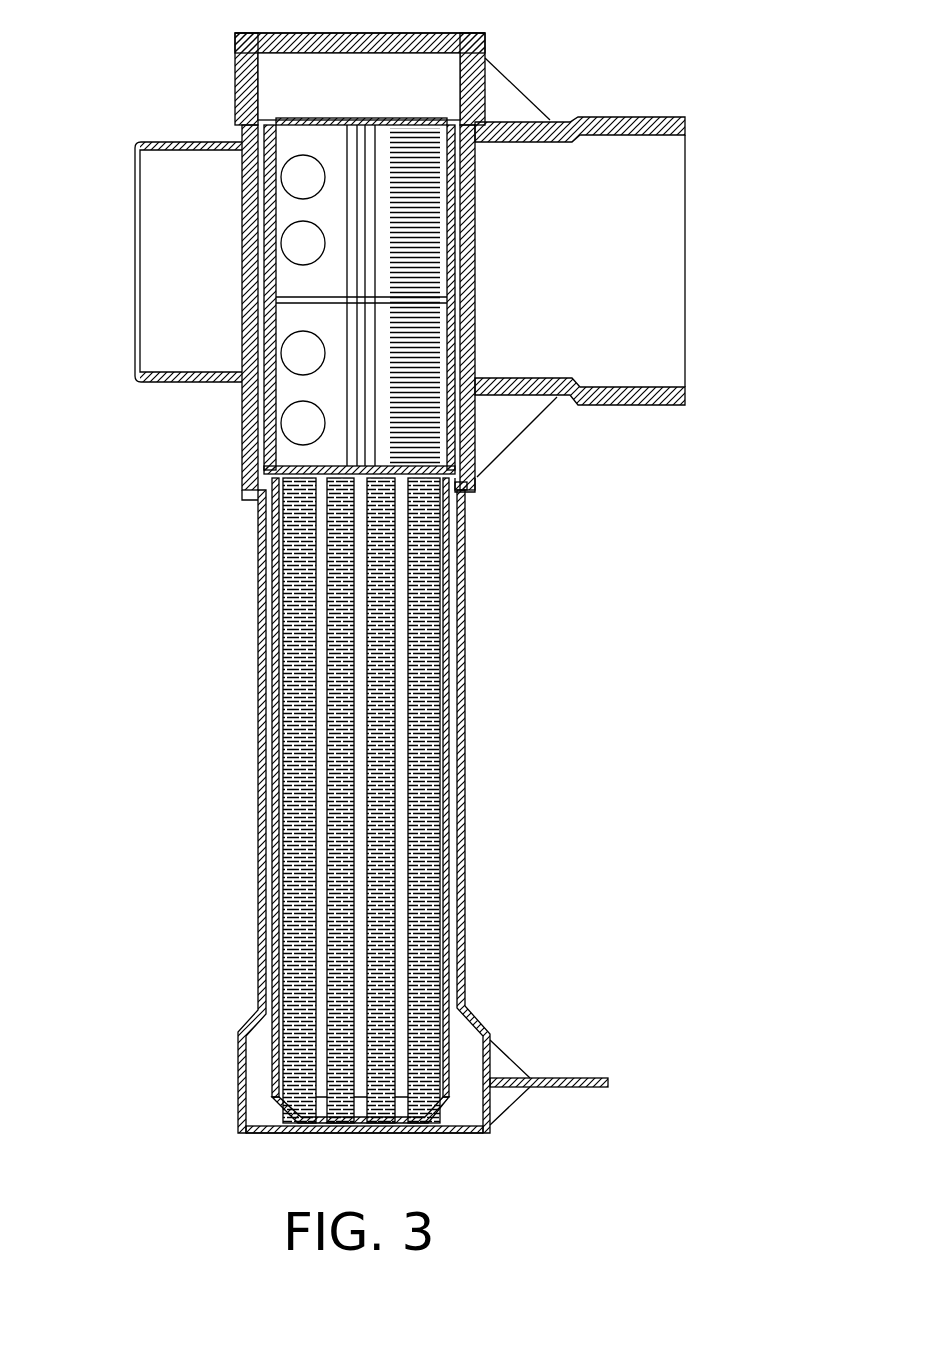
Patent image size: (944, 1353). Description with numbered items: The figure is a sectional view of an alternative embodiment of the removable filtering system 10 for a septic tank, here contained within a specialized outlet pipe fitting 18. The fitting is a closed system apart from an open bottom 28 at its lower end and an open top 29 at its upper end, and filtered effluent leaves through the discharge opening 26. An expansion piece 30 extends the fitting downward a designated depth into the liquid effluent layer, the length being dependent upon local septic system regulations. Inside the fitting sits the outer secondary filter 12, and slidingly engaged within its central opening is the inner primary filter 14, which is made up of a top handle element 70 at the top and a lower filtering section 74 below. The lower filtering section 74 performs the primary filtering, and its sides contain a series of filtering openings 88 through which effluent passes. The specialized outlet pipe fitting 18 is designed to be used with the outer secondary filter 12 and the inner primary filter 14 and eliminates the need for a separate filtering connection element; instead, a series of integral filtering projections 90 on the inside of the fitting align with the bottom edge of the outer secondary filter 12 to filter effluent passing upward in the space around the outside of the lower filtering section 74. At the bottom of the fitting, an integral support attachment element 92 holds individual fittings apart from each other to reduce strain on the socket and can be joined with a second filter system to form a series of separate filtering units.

The removable filtering system 10 is at (162, 678).
The outer secondary filter 12 is at (482, 252).
The inner primary filter 14 is at (462, 583).
The specialized outlet pipe fitting 18 is at (688, 122).
The discharge opening 26 is at (165, 308).
The open bottom 28 is at (463, 1124).
The open top 29 is at (470, 28).
The expansion piece 30 is at (465, 738).
The top handle element 70 is at (235, 85).
The lower filtering section 74 is at (450, 890).
The filtering openings 88 is at (440, 993).
The filtering projections 90 is at (472, 495).
The support attachment element 92 is at (608, 1077).